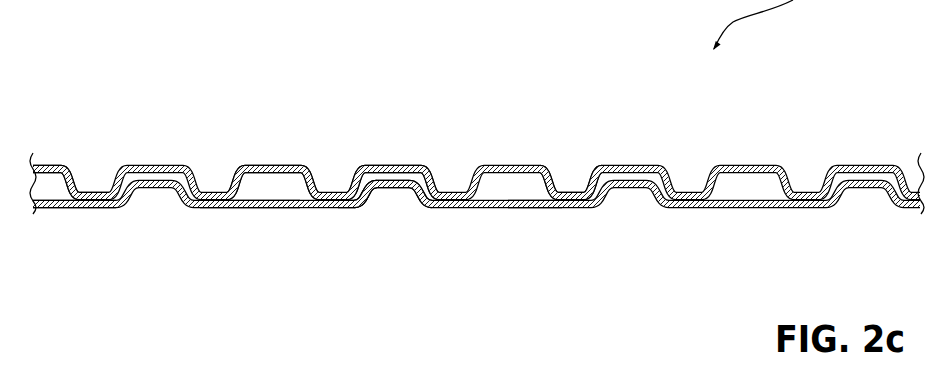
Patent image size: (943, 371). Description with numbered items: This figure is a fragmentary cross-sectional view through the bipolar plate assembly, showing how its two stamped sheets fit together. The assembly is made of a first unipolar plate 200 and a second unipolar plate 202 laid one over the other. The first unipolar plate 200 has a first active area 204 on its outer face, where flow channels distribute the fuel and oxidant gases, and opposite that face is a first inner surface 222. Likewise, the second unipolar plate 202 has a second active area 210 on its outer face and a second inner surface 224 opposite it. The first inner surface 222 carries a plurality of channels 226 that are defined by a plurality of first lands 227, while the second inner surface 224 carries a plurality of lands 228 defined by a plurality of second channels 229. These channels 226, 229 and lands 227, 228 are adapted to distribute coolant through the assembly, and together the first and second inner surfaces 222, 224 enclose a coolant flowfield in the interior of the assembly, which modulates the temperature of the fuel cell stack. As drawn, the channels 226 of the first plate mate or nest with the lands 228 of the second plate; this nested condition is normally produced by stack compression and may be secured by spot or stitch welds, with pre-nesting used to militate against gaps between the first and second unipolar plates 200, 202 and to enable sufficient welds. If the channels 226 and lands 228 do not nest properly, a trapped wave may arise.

The first unipolar plate 200 is at (55, 165).
The second unipolar plate 202 is at (60, 209).
The first active area 204 is at (382, 151).
The second active area 210 is at (390, 210).
The first inner surface 222 is at (282, 178).
The second inner surface 224 is at (250, 197).
The channels 226 is at (418, 166).
The first lands 227 is at (566, 190).
The lands 228 is at (357, 209).
The second channels 229 is at (523, 200).